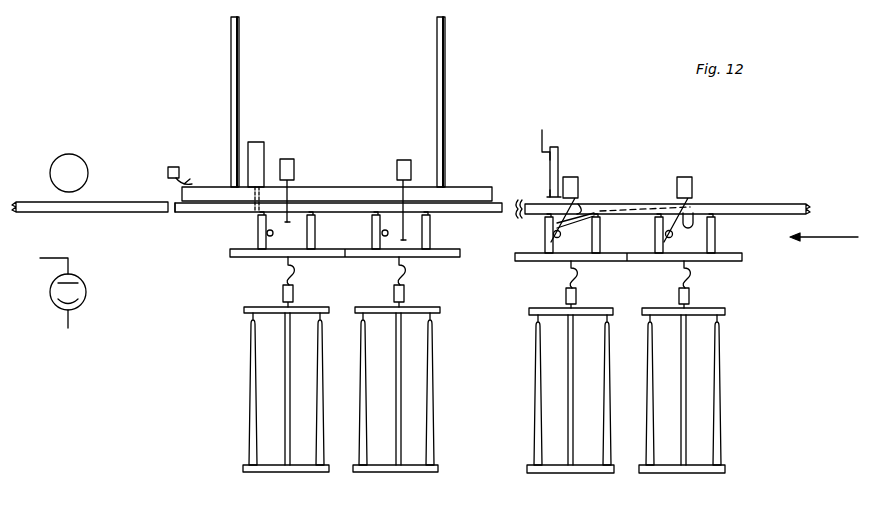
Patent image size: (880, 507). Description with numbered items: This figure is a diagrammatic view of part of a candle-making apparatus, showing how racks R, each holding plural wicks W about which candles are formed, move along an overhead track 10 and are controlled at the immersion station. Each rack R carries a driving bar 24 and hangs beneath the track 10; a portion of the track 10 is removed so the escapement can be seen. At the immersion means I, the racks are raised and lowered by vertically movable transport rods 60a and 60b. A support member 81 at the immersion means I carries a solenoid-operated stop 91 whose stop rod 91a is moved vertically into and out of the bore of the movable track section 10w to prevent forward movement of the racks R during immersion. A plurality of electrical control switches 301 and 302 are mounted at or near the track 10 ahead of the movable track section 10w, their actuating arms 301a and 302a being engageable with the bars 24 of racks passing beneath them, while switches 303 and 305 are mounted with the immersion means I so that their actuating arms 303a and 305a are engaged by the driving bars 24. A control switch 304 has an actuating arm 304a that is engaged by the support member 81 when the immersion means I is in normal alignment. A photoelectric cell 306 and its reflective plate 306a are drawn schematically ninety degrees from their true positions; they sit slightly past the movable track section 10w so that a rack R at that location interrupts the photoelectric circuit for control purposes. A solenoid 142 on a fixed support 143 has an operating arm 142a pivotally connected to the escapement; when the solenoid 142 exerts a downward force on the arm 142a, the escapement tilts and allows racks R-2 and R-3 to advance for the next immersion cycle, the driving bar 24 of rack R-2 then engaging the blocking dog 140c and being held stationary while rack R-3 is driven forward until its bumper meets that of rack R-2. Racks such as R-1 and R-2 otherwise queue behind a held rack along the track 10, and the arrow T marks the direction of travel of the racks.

The track 10 is at (95, 213).
The movable track section 10w is at (173, 214).
The driving bar 24 is at (561, 236).
The transport rod 60a is at (239, 63).
The transport rod 60b is at (445, 63).
The support member 81 is at (306, 187).
The solenoid-operated stop 91 is at (257, 142).
The stop rod 91a is at (252, 205).
The blocking dog 140c is at (550, 226).
The solenoid 142 is at (547, 158).
The operating arm 142a is at (552, 196).
The fixed support 143 is at (545, 130).
The electrical control switch 301 is at (687, 177).
The actuating arm 301a is at (668, 233).
The electrical control switch 302 is at (570, 177).
The actuating arm 302a is at (577, 210).
The electrical control switch 303 is at (403, 160).
The actuating arm 303a is at (405, 230).
The control switch 304 is at (168, 170).
The actuating arm 304a is at (190, 184).
The electrical control switch 305 is at (287, 159).
The actuating arm 305a is at (289, 222).
The photoelectric cell 306 is at (87, 292).
The reflective plate 306a is at (81, 158).
The immersion means I is at (459, 160).
The rack R is at (246, 319).
The rack R-1 is at (410, 290).
The rack R-2 is at (563, 291).
The rack R-3 is at (697, 298).
The direction of travel T is at (824, 246).
The wick W is at (256, 320).